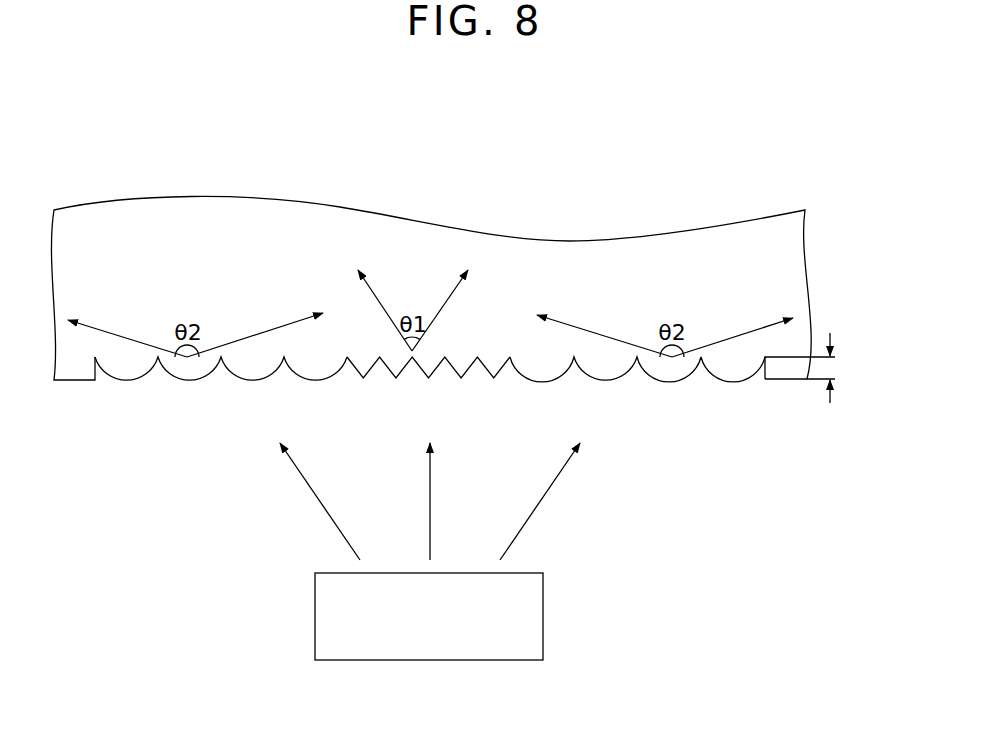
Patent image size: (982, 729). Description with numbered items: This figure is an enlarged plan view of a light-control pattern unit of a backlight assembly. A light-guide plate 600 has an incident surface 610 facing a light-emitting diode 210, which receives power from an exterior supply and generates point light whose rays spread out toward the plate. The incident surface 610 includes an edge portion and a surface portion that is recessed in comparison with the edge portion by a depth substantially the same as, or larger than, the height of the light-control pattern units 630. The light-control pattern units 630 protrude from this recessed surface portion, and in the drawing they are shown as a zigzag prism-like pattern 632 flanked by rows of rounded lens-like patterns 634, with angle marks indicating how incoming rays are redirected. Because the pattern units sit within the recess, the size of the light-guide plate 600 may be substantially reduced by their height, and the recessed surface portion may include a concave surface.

The light-guide plate 600 is at (550, 223).
The incident surface 610 is at (785, 380).
The light-control pattern units 630 is at (430, 293).
The prism pattern 632 is at (495, 366).
The lenticular lens pattern 634 is at (677, 371).
The light-emitting diode (LED) 210 is at (543, 614).